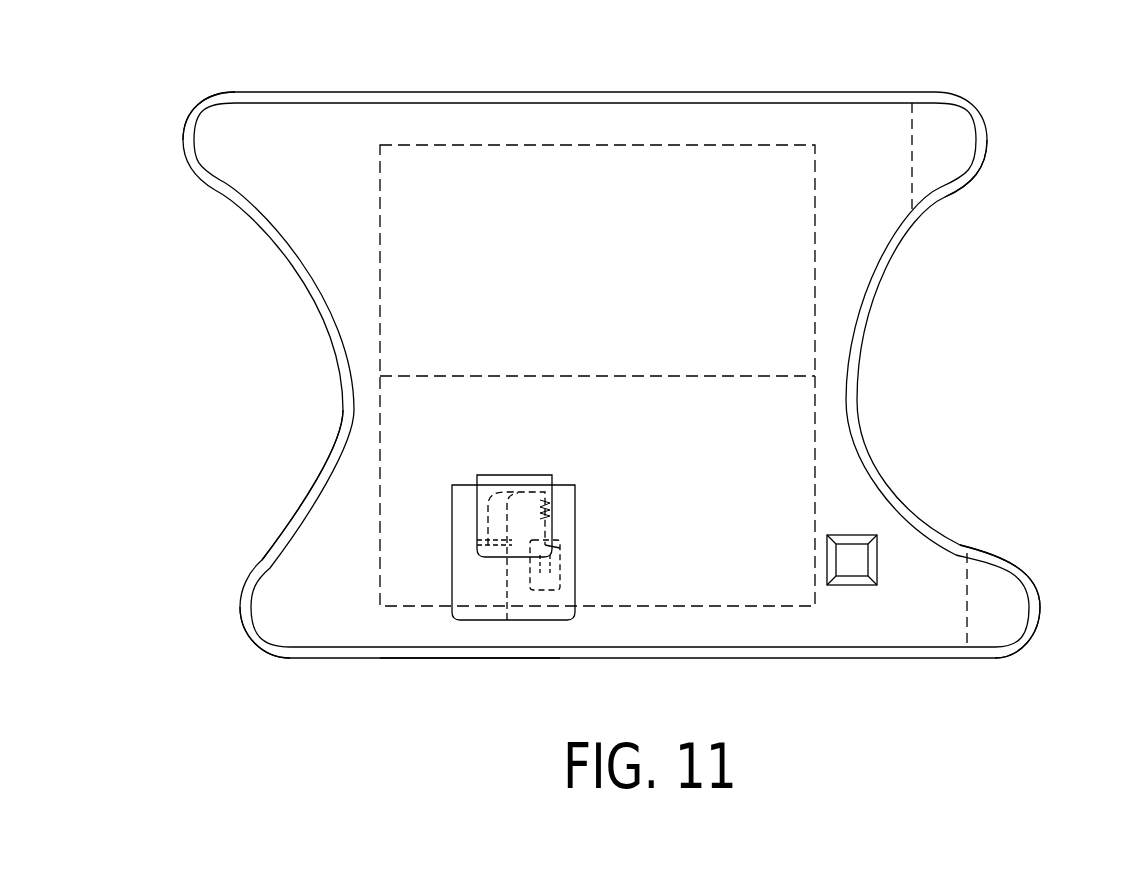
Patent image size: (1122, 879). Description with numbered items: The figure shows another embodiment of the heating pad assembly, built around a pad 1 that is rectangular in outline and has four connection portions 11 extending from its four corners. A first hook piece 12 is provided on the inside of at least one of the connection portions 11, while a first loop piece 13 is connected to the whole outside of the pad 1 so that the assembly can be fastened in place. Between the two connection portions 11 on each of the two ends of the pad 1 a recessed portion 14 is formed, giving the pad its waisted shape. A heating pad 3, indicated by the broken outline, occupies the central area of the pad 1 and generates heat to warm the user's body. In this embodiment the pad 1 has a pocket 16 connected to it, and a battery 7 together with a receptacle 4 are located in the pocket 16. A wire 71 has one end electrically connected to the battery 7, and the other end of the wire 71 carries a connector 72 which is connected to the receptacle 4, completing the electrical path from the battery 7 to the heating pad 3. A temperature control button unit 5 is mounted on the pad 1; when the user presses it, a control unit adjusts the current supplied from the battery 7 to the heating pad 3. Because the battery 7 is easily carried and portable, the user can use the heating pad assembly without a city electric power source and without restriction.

The pad 1 is at (672, 116).
The heating pad 3 is at (380, 238).
The connection portions 11 is at (205, 122).
The first hook piece 12 is at (912, 156).
The first loop piece 13 is at (313, 636).
The recessed portion 14 is at (348, 419).
The pocket 16 is at (462, 619).
The battery 7 is at (475, 610).
The wire 71 is at (512, 600).
The receptacle 4 is at (538, 600).
The connector 72 is at (555, 546).
The temperature control button unit 5 is at (853, 575).